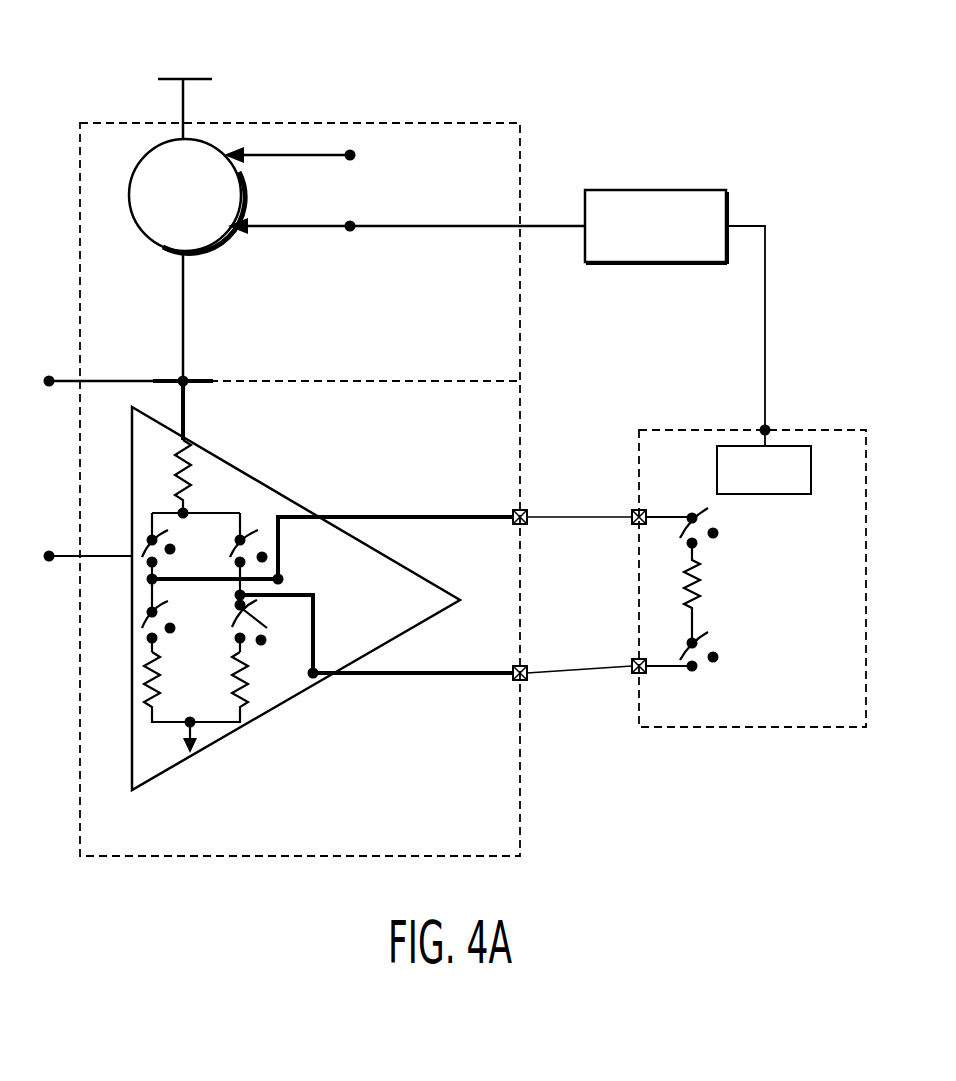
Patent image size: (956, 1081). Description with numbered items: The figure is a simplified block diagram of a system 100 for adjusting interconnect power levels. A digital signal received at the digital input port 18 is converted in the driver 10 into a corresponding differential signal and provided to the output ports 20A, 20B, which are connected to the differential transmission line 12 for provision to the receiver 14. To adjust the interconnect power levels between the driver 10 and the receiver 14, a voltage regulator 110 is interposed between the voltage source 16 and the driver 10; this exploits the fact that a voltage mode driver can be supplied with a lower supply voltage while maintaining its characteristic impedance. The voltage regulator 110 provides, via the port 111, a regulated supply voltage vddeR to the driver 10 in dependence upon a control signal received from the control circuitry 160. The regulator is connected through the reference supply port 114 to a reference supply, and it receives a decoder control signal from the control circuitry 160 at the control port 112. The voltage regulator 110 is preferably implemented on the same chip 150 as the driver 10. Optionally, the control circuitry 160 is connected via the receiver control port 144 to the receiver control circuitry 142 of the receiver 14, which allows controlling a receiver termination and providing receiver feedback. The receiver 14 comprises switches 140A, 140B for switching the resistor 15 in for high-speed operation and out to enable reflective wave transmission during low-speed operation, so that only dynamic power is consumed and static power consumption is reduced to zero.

The system 100 is at (451, 435).
The voltage source 16 is at (190, 79).
The reference supply port 114 is at (350, 152).
The control port 112 is at (350, 228).
The chip 150 is at (509, 176).
The control circuitry 160 is at (726, 198).
The voltage regulator 110 is at (147, 250).
The port 111 is at (49, 381).
The driver 10 is at (124, 845).
The digital input port 18 is at (49, 556).
The output port 20A is at (528, 510).
The output port 20B is at (527, 680).
The differential transmission line 12 is at (590, 540).
The receiver 14 is at (682, 470).
The receiver control port 144 is at (765, 430).
The receiver control circuitry 142 is at (781, 487).
The switch 140A is at (722, 517).
The switch 140B is at (706, 672).
The resistor 15 is at (675, 601).